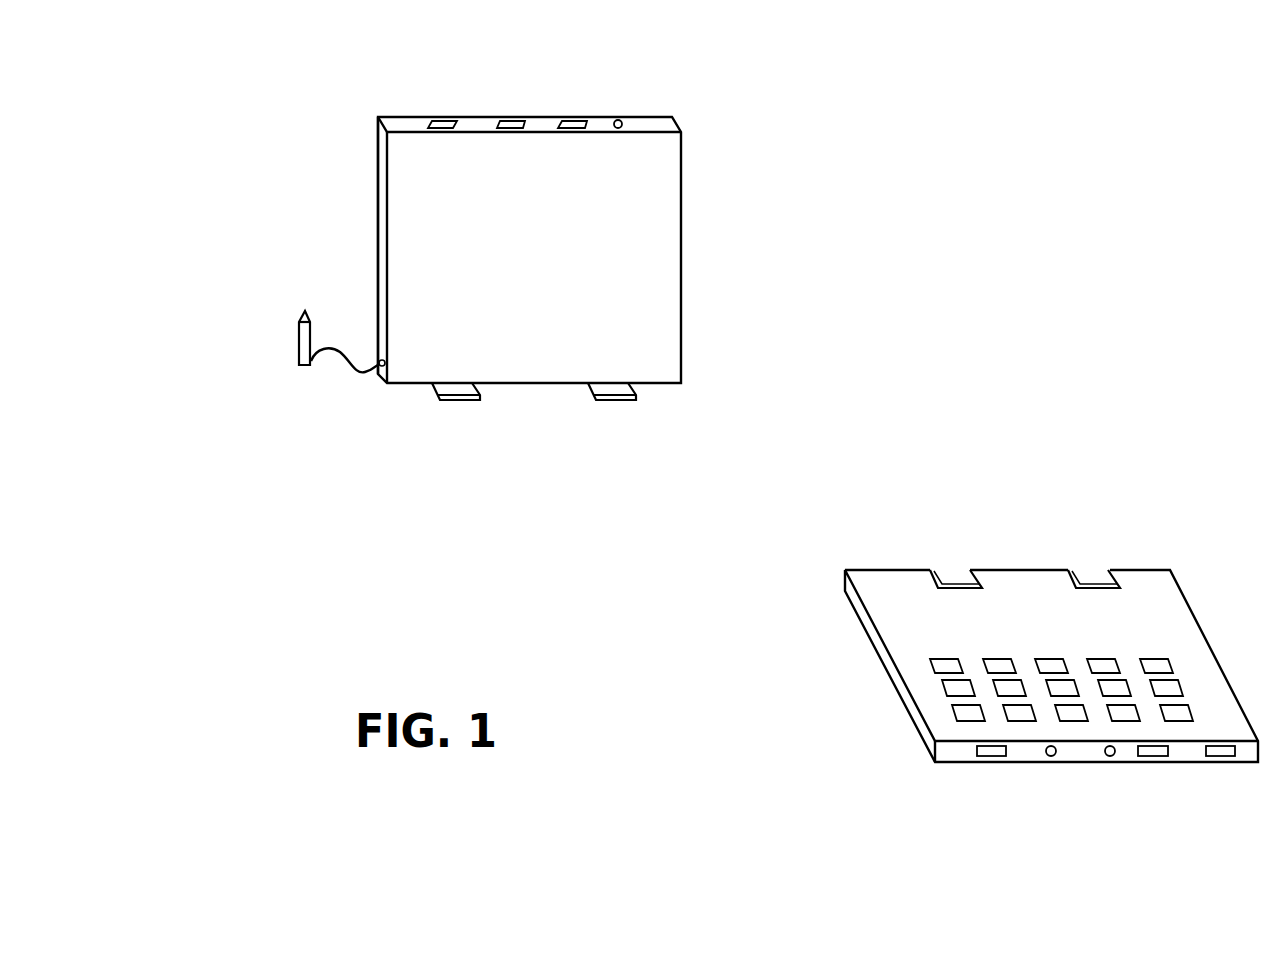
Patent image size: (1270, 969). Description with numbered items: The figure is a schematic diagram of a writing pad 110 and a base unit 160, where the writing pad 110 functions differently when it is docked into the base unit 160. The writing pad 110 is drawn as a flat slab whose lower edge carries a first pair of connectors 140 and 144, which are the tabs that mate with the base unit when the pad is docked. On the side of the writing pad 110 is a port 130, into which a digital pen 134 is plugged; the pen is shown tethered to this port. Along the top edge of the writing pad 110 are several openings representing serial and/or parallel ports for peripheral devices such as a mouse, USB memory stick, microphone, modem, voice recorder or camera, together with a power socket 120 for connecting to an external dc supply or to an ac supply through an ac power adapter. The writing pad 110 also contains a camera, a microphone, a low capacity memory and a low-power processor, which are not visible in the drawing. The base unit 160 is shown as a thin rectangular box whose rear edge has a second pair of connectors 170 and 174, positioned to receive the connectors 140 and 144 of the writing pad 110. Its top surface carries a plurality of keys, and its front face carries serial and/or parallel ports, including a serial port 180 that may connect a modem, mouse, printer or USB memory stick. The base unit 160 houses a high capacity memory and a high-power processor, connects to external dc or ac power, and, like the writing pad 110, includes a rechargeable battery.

The writing pad 110 is at (584, 283).
The power socket 120 is at (631, 113).
The port 130 is at (365, 389).
The digital pen 134 is at (283, 367).
The connector 140 is at (462, 410).
The connector 144 is at (632, 410).
The base unit 160 is at (1108, 634).
The connector 170 is at (942, 562).
The connector 174 is at (1085, 562).
The serial port 180 is at (965, 754).